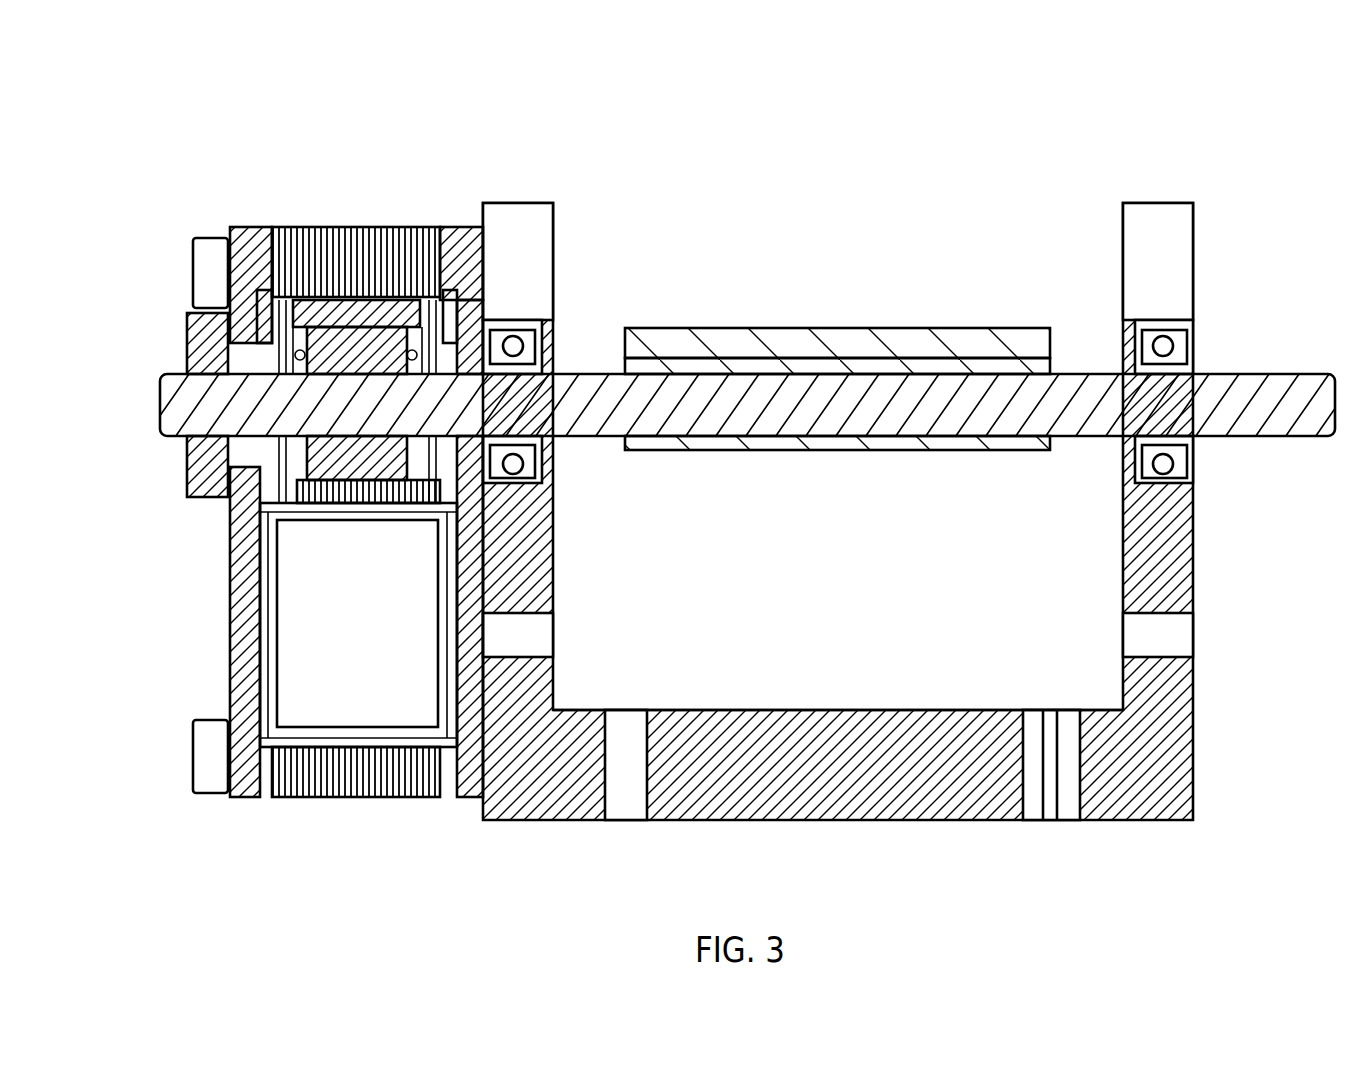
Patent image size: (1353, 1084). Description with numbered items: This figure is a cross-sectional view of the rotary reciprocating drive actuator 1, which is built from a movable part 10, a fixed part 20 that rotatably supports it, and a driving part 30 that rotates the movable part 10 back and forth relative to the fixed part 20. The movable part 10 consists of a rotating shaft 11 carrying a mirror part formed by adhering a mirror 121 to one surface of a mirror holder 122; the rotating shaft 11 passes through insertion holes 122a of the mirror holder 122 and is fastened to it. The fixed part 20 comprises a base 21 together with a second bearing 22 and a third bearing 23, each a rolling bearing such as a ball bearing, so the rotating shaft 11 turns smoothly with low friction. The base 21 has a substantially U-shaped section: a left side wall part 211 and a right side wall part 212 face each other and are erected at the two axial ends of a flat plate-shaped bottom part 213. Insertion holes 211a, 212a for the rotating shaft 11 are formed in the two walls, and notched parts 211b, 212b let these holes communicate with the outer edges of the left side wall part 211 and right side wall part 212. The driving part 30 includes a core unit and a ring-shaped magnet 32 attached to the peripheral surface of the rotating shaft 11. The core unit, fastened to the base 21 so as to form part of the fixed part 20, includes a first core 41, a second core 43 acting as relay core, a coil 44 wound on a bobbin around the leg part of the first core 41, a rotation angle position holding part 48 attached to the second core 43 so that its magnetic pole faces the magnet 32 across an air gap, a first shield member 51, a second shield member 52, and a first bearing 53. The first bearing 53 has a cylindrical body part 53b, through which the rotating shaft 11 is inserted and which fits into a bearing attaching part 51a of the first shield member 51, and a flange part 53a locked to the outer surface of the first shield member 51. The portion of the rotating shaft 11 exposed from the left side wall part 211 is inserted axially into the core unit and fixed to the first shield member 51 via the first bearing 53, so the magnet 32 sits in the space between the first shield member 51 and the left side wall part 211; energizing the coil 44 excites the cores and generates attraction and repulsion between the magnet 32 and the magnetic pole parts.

The rotary reciprocating drive actuator 1 is at (1052, 112).
The movable part 10 is at (837, 395).
The rotating shaft 11 is at (733, 400).
The mirror 121 is at (830, 345).
The mirror holder 122 is at (885, 368).
The insertion holes 122a is at (853, 440).
The fixed part 20 is at (879, 496).
The base 21 is at (838, 770).
The left side wall part 211 is at (561, 409).
The insertion hole 211a is at (553, 372).
The notched part 211b is at (553, 250).
The right side wall part 212 is at (1155, 411).
The insertion hole 212a is at (1120, 370).
The notched part 212b is at (1185, 245).
The bottom part 213 is at (778, 720).
The second bearing 22 is at (515, 340).
The third bearing 23 is at (1163, 340).
The driving part 30 is at (282, 451).
The magnet 32 is at (330, 458).
The first core 41 is at (292, 790).
The second core 43 is at (318, 300).
The coil 44 is at (330, 650).
The rotation angle position holding part 48 is at (395, 300).
The first shield member 51 is at (217, 479).
The bearing attaching part 51a is at (232, 503).
The second shield member 52 is at (462, 300).
The first bearing 53 is at (157, 440).
The flange part 53a is at (200, 484).
The body part 53b is at (248, 450).